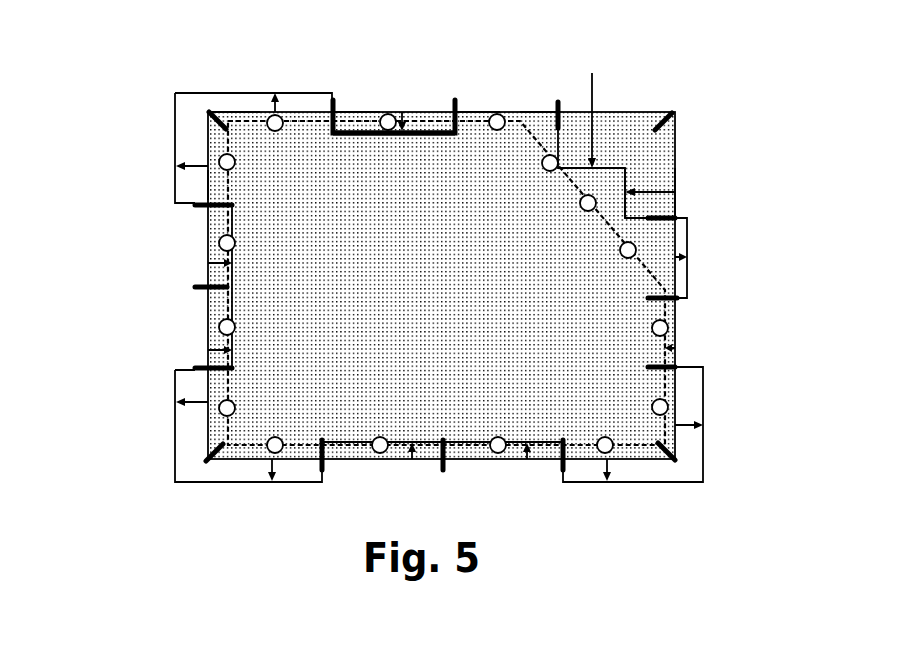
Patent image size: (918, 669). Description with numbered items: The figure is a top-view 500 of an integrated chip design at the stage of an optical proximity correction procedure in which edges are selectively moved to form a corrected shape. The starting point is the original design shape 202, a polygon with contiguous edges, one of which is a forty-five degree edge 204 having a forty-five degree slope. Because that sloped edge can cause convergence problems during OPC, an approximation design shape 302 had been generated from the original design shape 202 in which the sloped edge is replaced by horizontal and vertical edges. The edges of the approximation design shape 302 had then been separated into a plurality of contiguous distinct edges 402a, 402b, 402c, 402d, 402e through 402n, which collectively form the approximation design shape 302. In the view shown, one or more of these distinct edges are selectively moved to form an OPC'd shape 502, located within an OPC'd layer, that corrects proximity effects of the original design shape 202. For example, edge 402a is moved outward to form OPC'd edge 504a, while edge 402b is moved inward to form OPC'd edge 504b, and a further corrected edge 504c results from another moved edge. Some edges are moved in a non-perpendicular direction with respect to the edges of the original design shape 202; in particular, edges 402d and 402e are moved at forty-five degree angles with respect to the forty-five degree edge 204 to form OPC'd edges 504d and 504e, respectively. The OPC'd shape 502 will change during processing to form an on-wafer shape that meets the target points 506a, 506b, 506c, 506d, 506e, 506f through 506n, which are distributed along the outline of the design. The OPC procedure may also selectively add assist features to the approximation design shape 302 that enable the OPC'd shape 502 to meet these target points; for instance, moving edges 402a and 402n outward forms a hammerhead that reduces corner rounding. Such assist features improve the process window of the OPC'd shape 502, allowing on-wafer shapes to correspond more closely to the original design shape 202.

The top-view 500 is at (136, 72).
The OPC'd shape 502 is at (703, 450).
The original design shape 202 is at (665, 373).
The 45° edge 204 is at (645, 262).
The approximation design shape 302 is at (675, 330).
The distinct edge 402a is at (225, 112).
The distinct edge 402b is at (350, 112).
The distinct edge 402c is at (472, 112).
The distinct edge 402d is at (603, 114).
The distinct edge 402e is at (675, 203).
The distinct edge 402n is at (207, 187).
The OPC'd edge 504a is at (295, 93).
The OPC'd edge 504b is at (418, 131).
The OPC'd edge 504c is at (540, 112).
The OPC'd edge 504d is at (615, 168).
The OPC'd edge 504e is at (628, 183).
The target point 506a is at (275, 131).
The target point 506b is at (390, 130).
The target point 506c is at (497, 130).
The target point 506d is at (550, 171).
The target point 506e is at (588, 211).
The target point 506f is at (628, 258).
The target point 506n is at (175, 151).